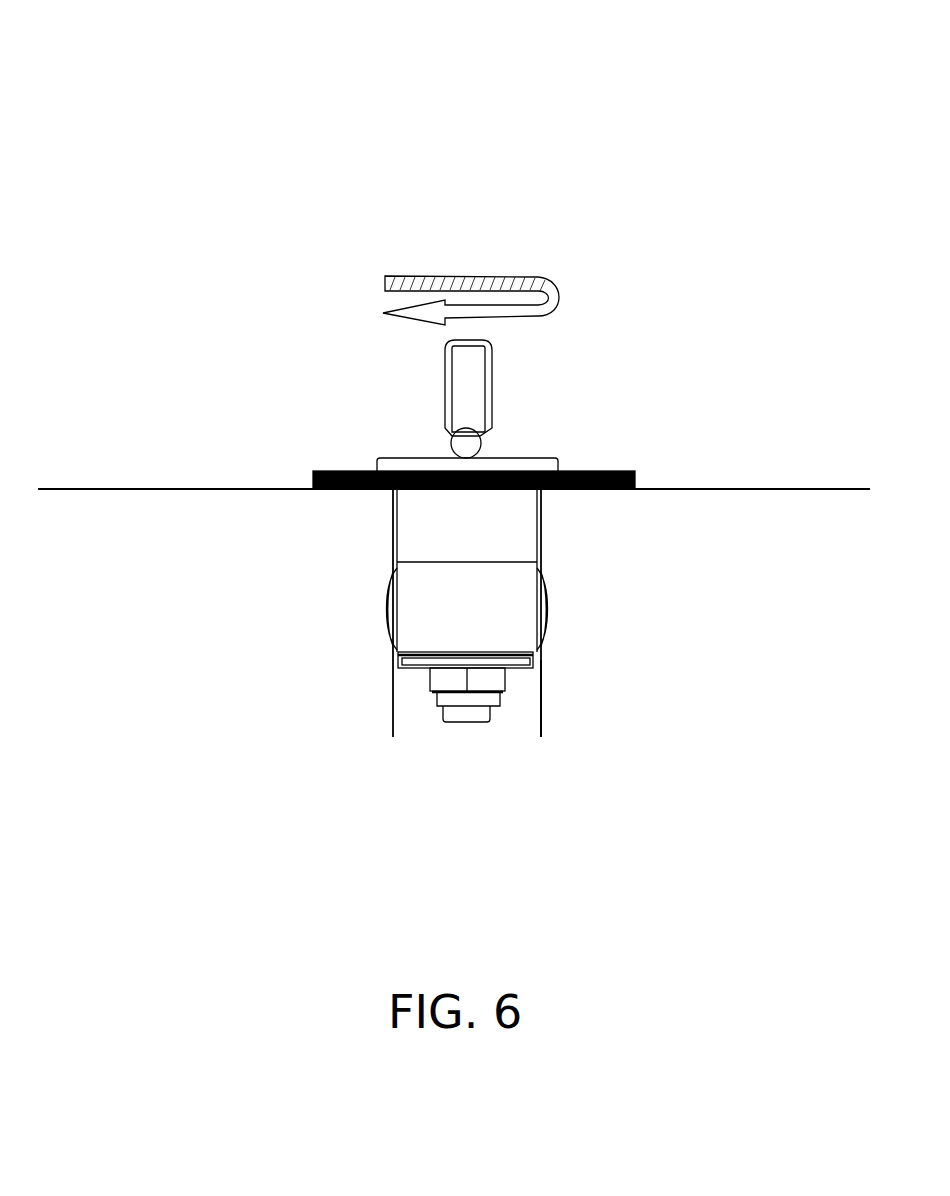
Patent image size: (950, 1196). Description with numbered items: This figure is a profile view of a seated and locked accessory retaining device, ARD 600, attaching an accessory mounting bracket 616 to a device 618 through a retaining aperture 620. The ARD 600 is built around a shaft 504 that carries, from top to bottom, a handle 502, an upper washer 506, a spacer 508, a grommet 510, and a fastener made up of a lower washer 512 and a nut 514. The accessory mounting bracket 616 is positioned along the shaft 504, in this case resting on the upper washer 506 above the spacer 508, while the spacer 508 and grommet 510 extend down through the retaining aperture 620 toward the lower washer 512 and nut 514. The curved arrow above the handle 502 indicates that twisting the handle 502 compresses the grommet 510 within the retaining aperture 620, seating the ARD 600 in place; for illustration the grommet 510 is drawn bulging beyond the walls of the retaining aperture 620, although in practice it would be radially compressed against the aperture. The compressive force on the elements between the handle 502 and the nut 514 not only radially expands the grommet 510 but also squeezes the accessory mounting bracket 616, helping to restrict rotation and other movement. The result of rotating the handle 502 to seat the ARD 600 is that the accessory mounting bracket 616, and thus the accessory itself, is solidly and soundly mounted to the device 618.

The ARD 600 is at (352, 58).
The handle 502 is at (447, 378).
The shaft 504 is at (462, 722).
The upper washer 506 is at (396, 458).
The spacer 508 is at (393, 518).
The grommet 510 is at (387, 596).
The lower washer 512 is at (395, 660).
The nut 514 is at (430, 680).
The accessory mounting bracket 616 is at (312, 471).
The device 618 is at (785, 489).
The retaining aperture 620 is at (541, 716).